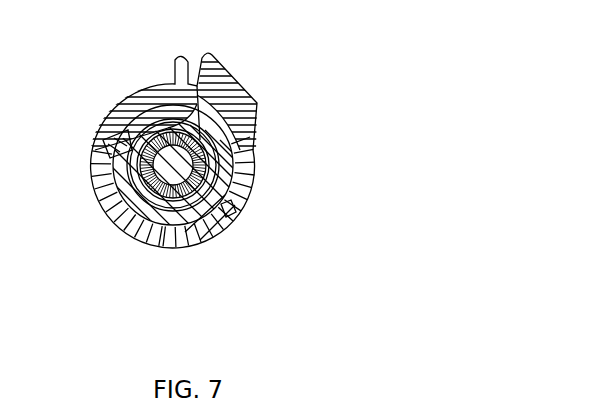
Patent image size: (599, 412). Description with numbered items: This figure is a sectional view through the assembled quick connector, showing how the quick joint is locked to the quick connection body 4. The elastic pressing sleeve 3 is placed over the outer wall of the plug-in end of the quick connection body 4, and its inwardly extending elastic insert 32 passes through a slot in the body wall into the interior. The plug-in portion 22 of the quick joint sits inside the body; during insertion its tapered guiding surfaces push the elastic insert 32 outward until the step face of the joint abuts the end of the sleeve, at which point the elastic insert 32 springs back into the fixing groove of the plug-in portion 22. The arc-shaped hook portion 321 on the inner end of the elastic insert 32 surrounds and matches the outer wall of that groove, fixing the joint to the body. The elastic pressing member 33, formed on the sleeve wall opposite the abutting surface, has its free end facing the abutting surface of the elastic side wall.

The elastic pressing sleeve 3 is at (307, 112).
The quick connection body 4 is at (243, 195).
The plug-in portion 22 is at (180, 194).
The elastic insert 32 is at (137, 108).
The hook portion 321 is at (107, 124).
The elastic pressing member 33 is at (245, 103).